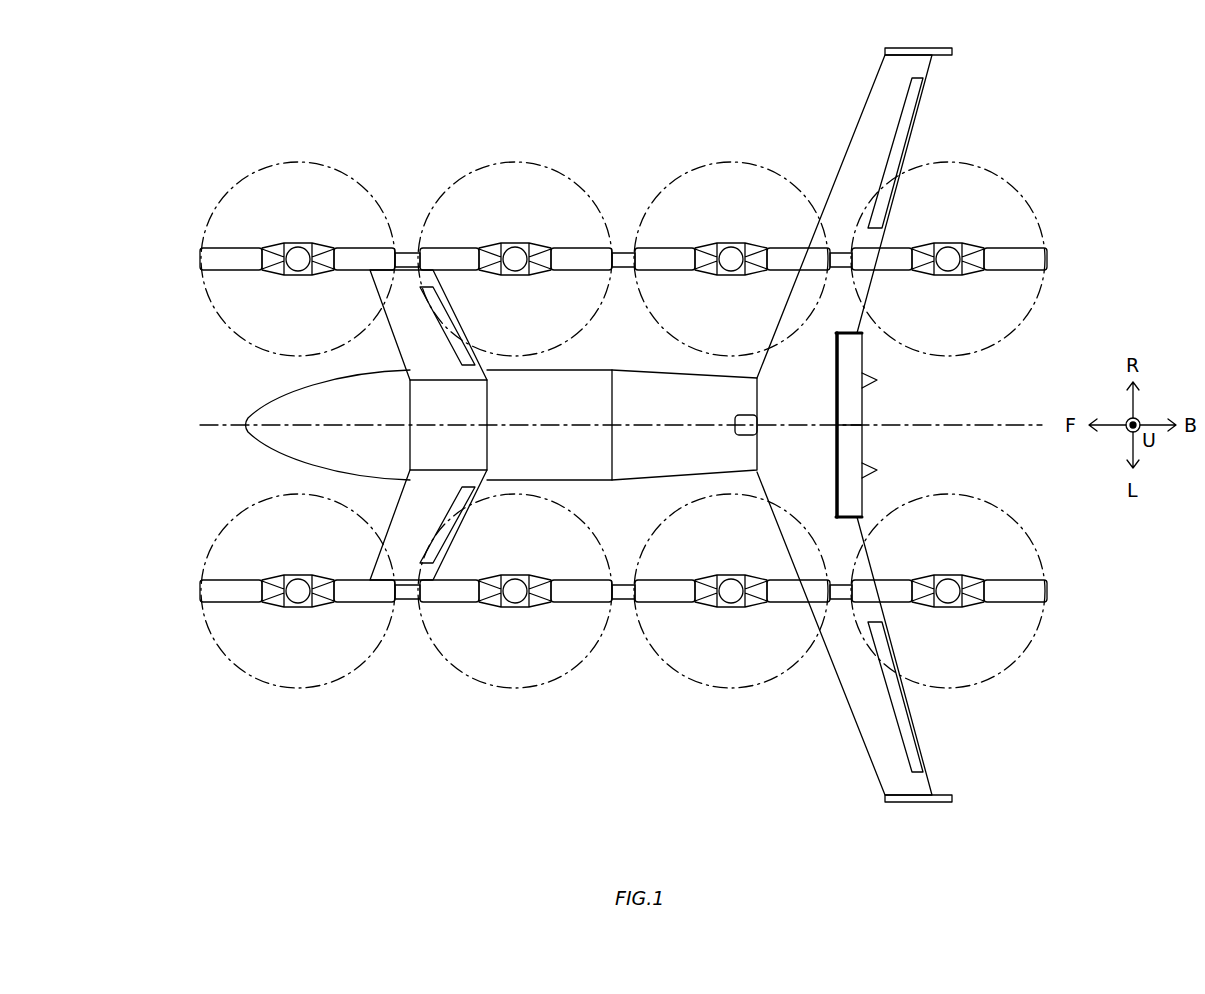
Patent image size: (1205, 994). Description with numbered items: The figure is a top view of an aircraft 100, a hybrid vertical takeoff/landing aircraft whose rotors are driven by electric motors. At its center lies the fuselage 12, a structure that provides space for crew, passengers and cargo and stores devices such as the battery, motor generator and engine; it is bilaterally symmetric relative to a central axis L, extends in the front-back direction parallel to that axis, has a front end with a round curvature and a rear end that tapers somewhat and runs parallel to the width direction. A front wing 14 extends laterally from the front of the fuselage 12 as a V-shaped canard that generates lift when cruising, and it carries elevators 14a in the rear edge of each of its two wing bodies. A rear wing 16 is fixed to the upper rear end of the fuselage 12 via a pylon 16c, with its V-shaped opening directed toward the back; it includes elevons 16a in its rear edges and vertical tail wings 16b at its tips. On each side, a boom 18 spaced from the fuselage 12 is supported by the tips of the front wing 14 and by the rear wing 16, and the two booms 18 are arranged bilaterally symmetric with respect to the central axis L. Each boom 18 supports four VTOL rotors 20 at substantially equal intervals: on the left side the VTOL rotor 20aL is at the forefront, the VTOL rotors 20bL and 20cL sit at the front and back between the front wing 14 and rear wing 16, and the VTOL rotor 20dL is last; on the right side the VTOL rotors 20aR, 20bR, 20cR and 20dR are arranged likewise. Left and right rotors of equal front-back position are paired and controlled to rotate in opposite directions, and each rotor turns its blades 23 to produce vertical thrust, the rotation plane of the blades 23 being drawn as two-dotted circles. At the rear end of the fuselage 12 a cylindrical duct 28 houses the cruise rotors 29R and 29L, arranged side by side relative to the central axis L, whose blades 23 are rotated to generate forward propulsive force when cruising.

The aircraft 100 is at (140, 60).
The fuselage 12 is at (275, 412).
The front wing 14 is at (410, 334).
The elevator 14a is at (458, 318).
The rear wing 16 is at (870, 135).
The elevon 16a is at (912, 120).
The vertical tail wing 16b is at (955, 51).
The pylon 16c is at (740, 413).
The boom 18 is at (407, 253).
The VTOL rotor 20 is at (277, 245).
The VTOL rotor 20aR is at (274, 214).
The VTOL rotor 20bR is at (544, 222).
The VTOL rotor 20cR is at (715, 208).
The VTOL rotor 20dR is at (979, 222).
The VTOL rotor 20aL is at (272, 634).
The VTOL rotor 20bL is at (544, 628).
The VTOL rotor 20cL is at (717, 640).
The VTOL rotor 20dL is at (978, 623).
The blade 23 is at (215, 258).
The duct 28 is at (853, 350).
The cruise rotor 29R is at (877, 380).
The cruise rotor 29L is at (877, 470).
The central axis L is at (1025, 425).